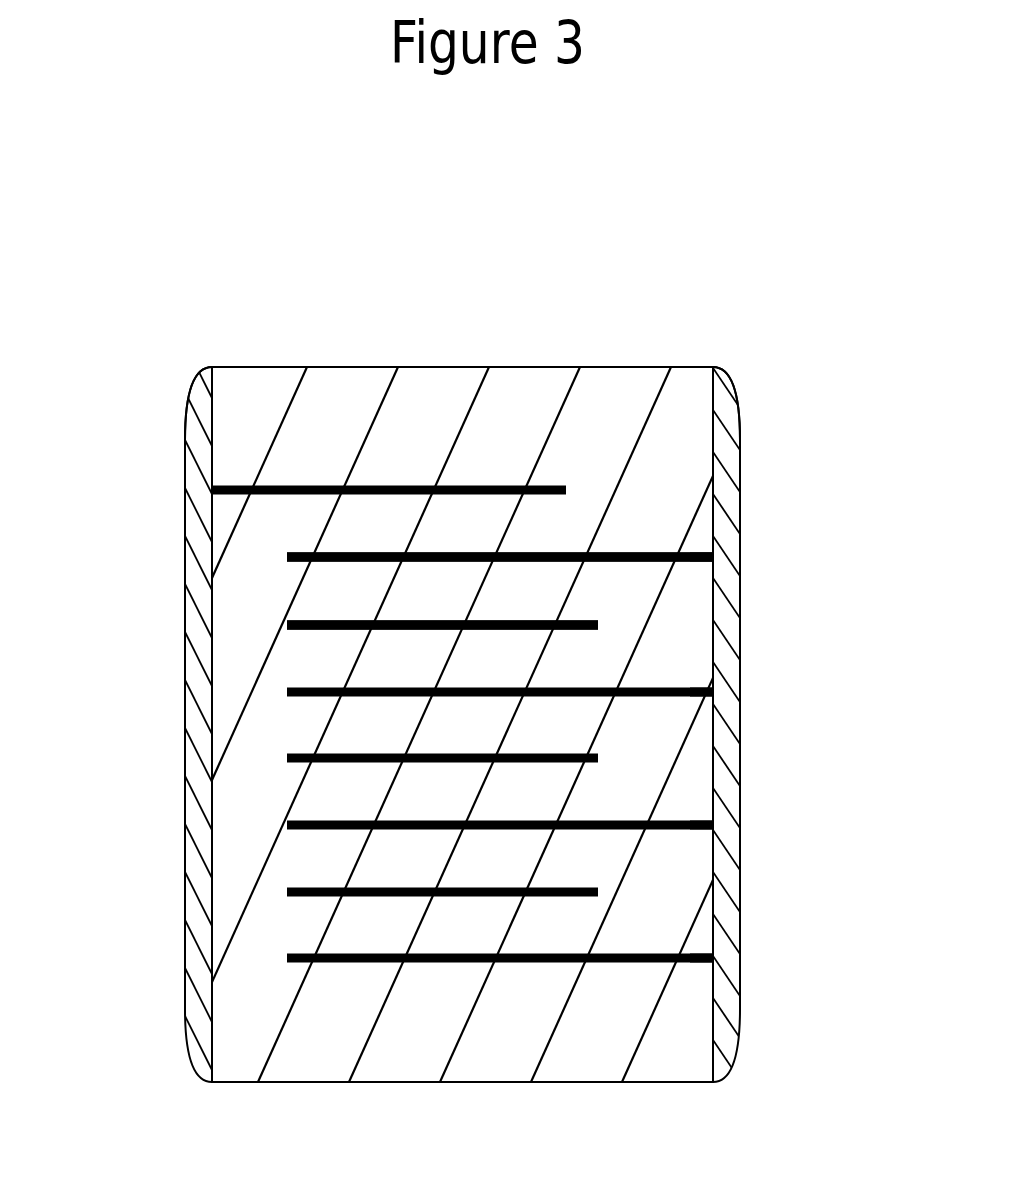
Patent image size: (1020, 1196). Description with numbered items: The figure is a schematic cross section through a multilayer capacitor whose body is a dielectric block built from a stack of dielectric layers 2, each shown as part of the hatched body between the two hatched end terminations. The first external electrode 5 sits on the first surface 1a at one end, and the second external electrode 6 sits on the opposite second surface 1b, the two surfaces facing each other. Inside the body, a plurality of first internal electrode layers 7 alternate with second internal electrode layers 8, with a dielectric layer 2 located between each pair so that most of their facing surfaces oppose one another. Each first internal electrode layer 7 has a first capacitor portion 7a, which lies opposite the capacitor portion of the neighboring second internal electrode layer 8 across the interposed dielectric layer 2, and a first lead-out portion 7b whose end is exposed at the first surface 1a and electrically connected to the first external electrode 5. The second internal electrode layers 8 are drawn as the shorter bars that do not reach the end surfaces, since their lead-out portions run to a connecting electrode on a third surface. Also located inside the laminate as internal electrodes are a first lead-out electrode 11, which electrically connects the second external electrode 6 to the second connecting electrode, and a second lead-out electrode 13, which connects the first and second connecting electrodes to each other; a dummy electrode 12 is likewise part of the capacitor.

The first surface 1a is at (714, 428).
The second surface 1b is at (212, 432).
The dielectric layer 2 is at (400, 1018).
The first external electrode 5 is at (723, 1040).
The second external electrode 6 is at (200, 1017).
The first internal electrode layer 7 is at (647, 563).
The first capacitor portion 7a is at (598, 550).
The first lead-out portion 7b is at (713, 690).
The second internal electrode layer 8 is at (283, 890).
The first lead-out electrode 11 is at (325, 437).
The dummy electrode 12 is at (463, 518).
The second lead-out electrode 13 is at (283, 625).